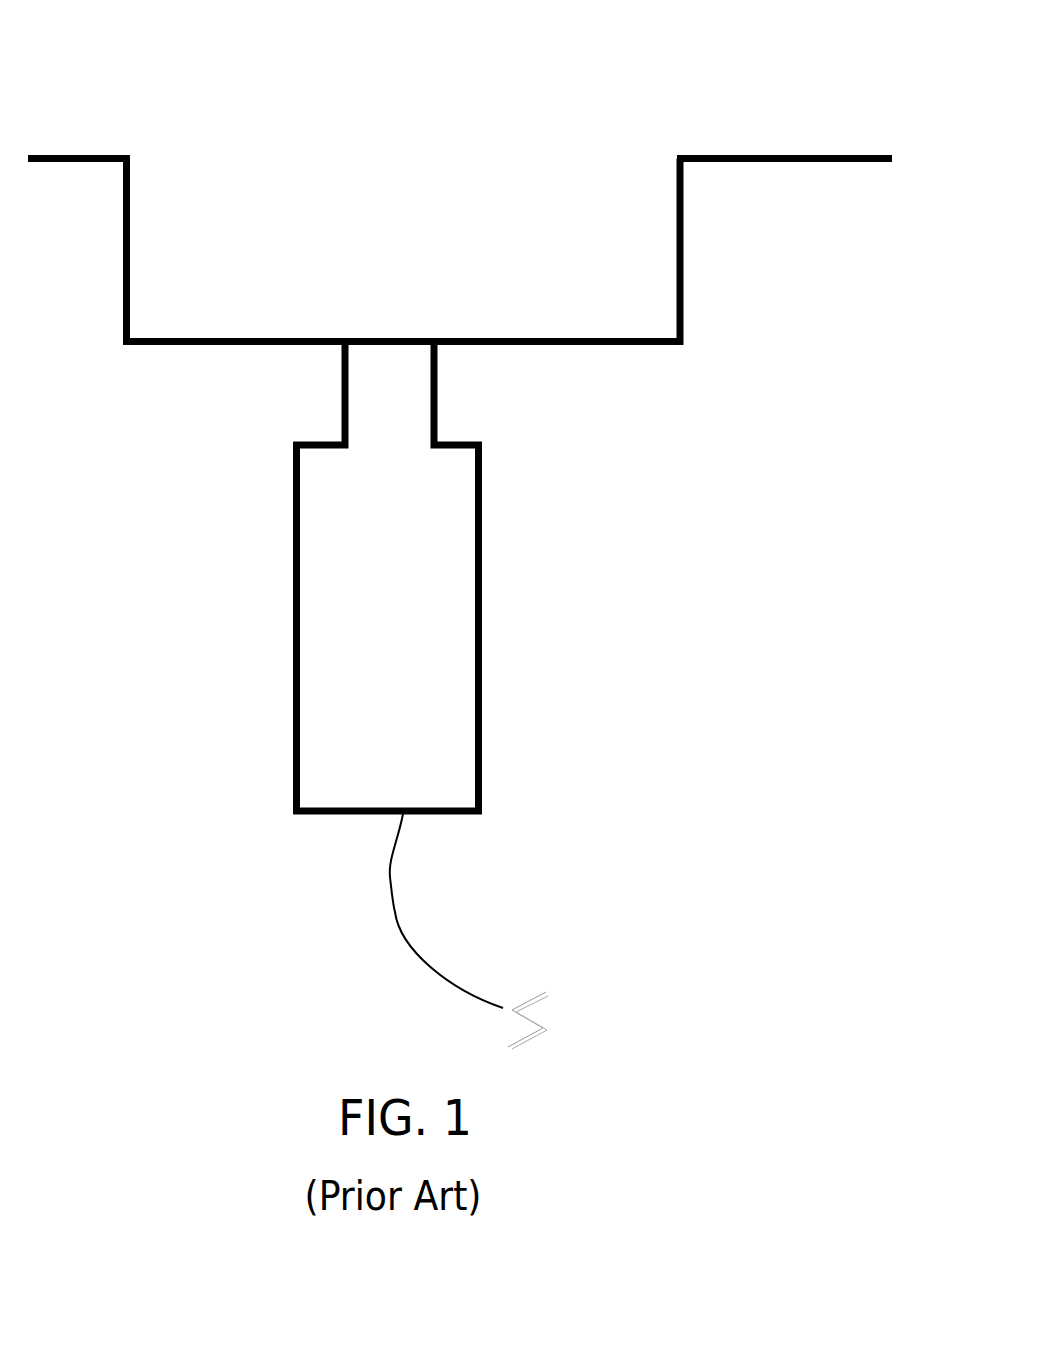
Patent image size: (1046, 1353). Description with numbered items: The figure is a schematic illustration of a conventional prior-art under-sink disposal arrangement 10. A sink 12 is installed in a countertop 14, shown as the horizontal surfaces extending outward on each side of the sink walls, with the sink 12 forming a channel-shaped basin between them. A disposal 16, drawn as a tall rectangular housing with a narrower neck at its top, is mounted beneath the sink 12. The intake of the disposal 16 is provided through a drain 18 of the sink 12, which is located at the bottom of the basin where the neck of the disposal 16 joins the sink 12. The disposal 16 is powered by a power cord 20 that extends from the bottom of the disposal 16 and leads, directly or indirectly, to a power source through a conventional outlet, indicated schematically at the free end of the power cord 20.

The under-sink disposal arrangement 10 is at (88, 68).
The sink 12 is at (660, 343).
The countertop 14 is at (765, 155).
The disposal 16 is at (292, 553).
The drain 18 is at (403, 302).
The power cord 20 is at (390, 893).